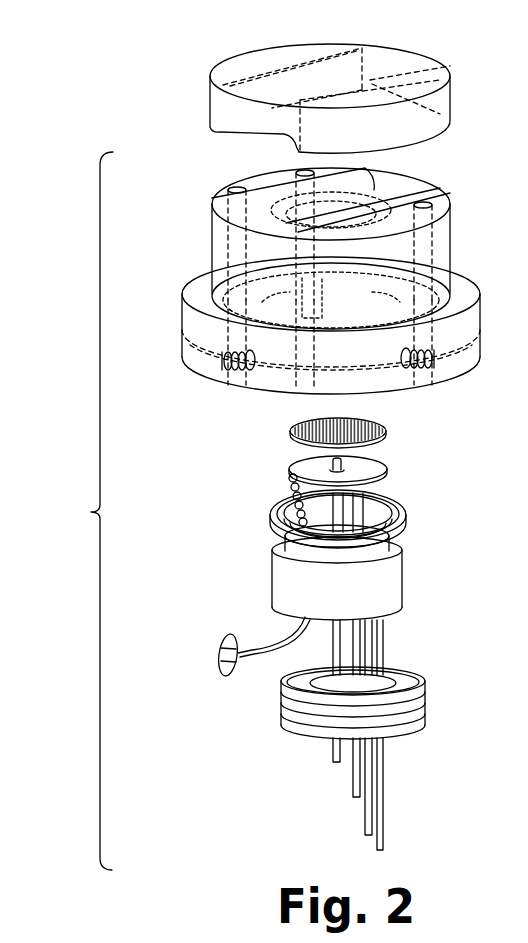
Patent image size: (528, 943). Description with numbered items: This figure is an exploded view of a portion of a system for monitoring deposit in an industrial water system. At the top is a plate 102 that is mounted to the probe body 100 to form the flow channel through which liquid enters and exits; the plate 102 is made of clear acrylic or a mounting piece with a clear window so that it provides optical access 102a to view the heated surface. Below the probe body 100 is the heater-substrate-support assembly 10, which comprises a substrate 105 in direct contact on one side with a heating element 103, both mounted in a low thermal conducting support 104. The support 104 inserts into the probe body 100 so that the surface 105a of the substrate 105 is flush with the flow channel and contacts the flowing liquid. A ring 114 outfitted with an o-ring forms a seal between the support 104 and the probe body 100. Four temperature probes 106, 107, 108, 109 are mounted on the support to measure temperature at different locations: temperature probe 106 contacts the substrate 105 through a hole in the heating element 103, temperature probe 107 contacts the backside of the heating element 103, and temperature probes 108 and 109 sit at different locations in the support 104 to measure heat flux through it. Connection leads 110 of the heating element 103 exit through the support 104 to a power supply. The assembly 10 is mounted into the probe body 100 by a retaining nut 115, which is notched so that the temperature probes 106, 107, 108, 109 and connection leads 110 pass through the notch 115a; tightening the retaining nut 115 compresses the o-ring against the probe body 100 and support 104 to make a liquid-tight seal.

The heater-substrate-support assembly 10 is at (293, 444).
The probe body 100 is at (202, 287).
The plate 102 is at (235, 70).
The optical access 102a is at (380, 80).
The heating element 103 is at (290, 470).
The support 104 is at (285, 580).
The substrate 105 is at (290, 430).
The surface 105a is at (378, 422).
The temperature probe 106 is at (333, 753).
The temperature probe 107 is at (353, 790).
The temperature probe 108 is at (365, 828).
The temperature probe 109 is at (377, 845).
The connection leads 110 is at (220, 652).
The ring 114 is at (405, 512).
The retaining nut 115 is at (425, 700).
The notch 115a is at (390, 670).